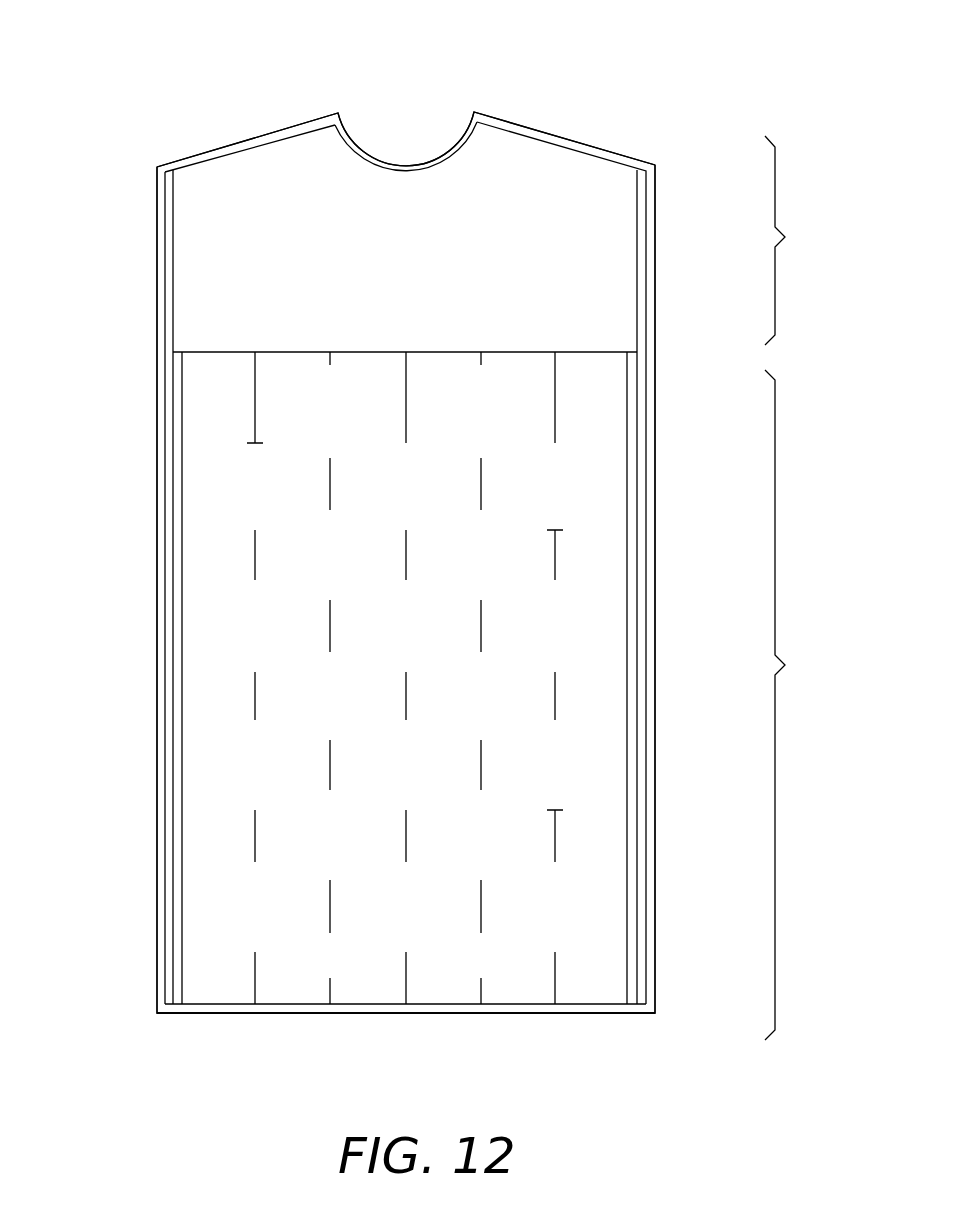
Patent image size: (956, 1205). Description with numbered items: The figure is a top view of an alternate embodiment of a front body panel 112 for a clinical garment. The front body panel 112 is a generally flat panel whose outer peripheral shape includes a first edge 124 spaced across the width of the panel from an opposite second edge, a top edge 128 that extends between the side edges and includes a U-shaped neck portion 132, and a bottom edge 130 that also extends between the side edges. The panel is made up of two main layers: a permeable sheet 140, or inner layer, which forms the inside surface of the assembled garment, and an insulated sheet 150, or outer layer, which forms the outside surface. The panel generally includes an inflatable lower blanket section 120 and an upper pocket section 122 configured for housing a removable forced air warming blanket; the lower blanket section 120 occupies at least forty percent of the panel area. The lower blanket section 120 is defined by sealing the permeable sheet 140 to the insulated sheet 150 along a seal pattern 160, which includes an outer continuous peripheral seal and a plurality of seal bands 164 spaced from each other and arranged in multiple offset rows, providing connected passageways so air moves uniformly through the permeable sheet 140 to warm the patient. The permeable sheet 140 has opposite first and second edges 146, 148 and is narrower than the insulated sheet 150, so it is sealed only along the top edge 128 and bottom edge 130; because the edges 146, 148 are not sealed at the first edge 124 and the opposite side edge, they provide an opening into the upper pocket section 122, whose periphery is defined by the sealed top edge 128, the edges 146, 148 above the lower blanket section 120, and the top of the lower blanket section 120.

The front body panel 112 is at (672, 86).
The lower blanket section 120 is at (798, 705).
The upper pocket section 122 is at (798, 240).
The first edge 124 is at (157, 512).
The top edge 128 is at (230, 145).
The bottom edge 130 is at (520, 1015).
The U-shaped neck portion 132 is at (405, 167).
The permeable sheet 140 is at (195, 272).
The first edge of permeable sheet 146 is at (173, 223).
The second edge of permeable sheet 148 is at (637, 285).
The insulated sheet 150 is at (148, 336).
The seal pattern 160 is at (182, 795).
The seal bands 164 is at (255, 696).